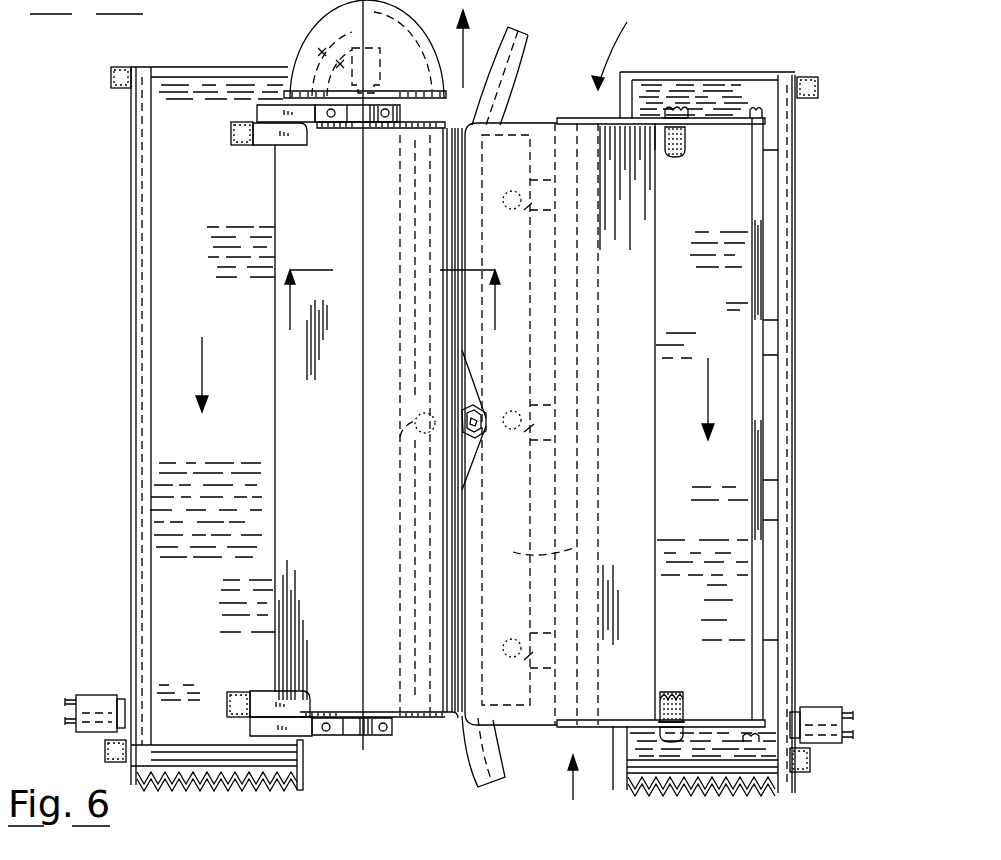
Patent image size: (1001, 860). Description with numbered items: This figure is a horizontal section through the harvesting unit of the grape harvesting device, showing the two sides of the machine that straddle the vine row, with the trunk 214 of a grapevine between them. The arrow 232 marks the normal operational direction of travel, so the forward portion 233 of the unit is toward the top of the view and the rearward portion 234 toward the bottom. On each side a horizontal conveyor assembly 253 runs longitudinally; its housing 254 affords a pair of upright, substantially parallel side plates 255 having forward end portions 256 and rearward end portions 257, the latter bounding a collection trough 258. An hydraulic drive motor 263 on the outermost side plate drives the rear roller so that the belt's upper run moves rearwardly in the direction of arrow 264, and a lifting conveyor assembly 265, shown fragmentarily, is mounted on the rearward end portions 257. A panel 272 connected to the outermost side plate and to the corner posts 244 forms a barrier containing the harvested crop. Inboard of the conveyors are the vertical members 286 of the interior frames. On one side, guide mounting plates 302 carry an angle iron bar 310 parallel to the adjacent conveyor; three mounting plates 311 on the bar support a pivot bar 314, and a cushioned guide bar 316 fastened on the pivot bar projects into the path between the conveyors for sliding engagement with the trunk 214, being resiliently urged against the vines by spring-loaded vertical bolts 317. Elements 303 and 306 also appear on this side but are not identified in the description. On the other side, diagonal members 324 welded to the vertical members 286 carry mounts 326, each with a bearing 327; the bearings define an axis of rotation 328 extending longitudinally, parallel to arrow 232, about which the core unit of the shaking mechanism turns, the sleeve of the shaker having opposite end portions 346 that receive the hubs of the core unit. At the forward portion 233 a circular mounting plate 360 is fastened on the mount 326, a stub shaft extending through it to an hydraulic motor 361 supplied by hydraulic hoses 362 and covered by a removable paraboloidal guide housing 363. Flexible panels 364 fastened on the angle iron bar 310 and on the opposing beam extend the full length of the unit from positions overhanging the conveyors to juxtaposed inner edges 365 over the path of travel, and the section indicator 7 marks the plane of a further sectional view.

The section line of FIG. 7 is at (393, 304).
The trunk 214 is at (463, 432).
The arrow 232 is at (473, 50).
The forward portion 233 is at (622, 45).
The rearward portion 234 is at (576, 796).
The corner posts 244 is at (111, 78).
The horizontal conveyor assembly 253 is at (233, 211).
The housing 254 is at (125, 252).
The side plates 255 is at (131, 146).
The forward end portions 256 is at (136, 67).
The rearward end portions 257 is at (300, 746).
The collection trough 258 is at (300, 784).
The hydraulic drive motor 263 is at (106, 695).
The arrow 264 is at (203, 358).
The lifting conveyor assembly 265 is at (218, 784).
The panel 272 is at (152, 268).
The vertical members 286 is at (231, 132).
The guide mounting plates 302 is at (597, 118).
The spacer strip 303 is at (733, 96).
The edge strip 306 is at (750, 528).
The angle iron bar 310 is at (552, 150).
The mounting plates 311 is at (518, 207).
The pivot bar 314 is at (575, 543).
The cushioned guide bar 316 is at (528, 36).
The vertical stud or bolt 317 is at (510, 190).
The diagonal members 324 is at (268, 134).
The mount 326 is at (280, 108).
The bearing 327 is at (360, 120).
The axis of rotation 328 is at (360, 562).
The opposite end portions 346 is at (393, 130).
The circular mounting plate 360 is at (393, 123).
The hydraulic motor 361 is at (381, 72).
The hydraulic hoses 362 is at (340, 64).
The guide housing 363 is at (322, 18).
The flexible panels 364 is at (328, 471).
The inner edges 365 is at (448, 131).